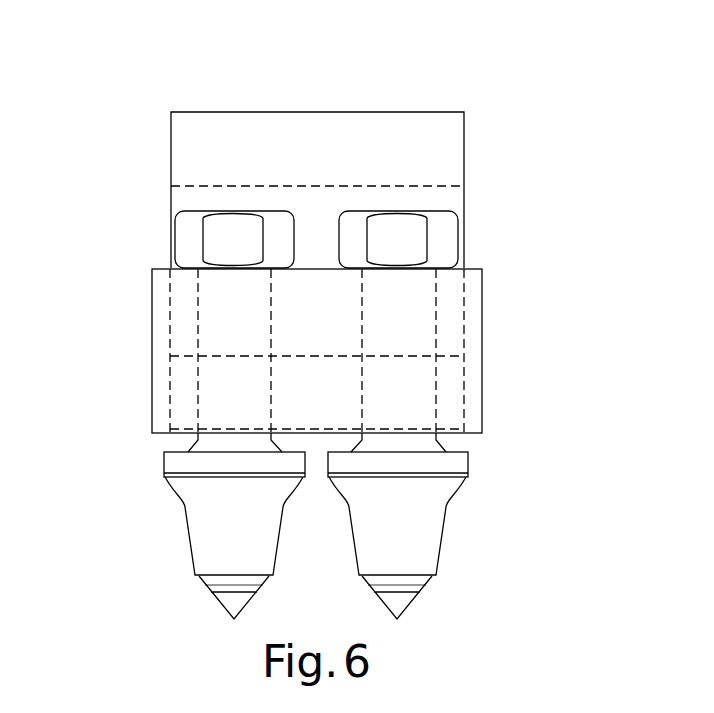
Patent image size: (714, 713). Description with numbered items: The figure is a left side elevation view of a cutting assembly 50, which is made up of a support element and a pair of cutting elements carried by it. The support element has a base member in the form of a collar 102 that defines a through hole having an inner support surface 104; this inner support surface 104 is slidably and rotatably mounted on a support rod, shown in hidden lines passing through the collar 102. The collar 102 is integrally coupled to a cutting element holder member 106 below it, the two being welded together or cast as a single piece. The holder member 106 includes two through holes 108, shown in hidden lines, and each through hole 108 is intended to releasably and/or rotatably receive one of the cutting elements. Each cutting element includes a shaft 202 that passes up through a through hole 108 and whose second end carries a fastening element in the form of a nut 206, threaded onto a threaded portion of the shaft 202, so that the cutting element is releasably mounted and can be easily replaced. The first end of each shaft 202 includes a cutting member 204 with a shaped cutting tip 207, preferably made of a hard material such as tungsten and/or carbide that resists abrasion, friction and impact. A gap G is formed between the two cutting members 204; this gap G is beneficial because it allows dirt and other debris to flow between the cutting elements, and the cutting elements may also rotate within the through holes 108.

The cutting assembly 50 is at (507, 66).
The collar 102 is at (400, 112).
The inner support surface 104 is at (190, 187).
The cutting element holder member 106 is at (482, 356).
The through hole 108 is at (361, 306).
The shaft 202 is at (191, 449).
The cutting member 204 is at (170, 519).
The nut 206 is at (237, 211).
The shaped cutting tip 207 is at (213, 598).
The gap G is at (374, 603).